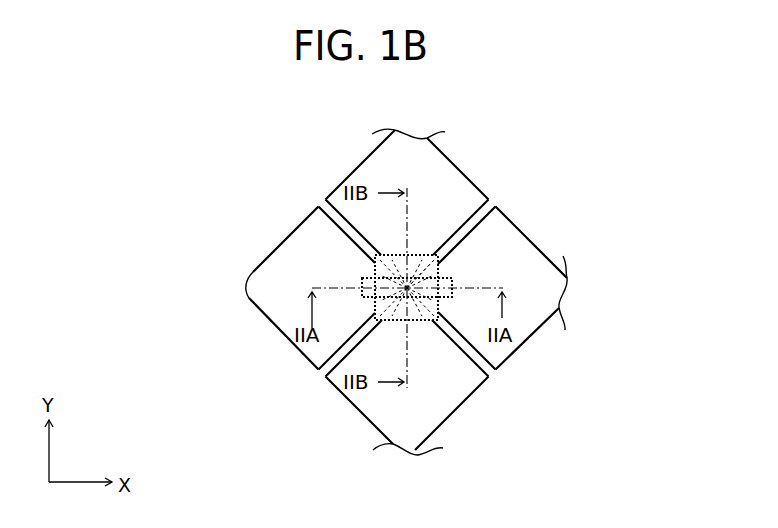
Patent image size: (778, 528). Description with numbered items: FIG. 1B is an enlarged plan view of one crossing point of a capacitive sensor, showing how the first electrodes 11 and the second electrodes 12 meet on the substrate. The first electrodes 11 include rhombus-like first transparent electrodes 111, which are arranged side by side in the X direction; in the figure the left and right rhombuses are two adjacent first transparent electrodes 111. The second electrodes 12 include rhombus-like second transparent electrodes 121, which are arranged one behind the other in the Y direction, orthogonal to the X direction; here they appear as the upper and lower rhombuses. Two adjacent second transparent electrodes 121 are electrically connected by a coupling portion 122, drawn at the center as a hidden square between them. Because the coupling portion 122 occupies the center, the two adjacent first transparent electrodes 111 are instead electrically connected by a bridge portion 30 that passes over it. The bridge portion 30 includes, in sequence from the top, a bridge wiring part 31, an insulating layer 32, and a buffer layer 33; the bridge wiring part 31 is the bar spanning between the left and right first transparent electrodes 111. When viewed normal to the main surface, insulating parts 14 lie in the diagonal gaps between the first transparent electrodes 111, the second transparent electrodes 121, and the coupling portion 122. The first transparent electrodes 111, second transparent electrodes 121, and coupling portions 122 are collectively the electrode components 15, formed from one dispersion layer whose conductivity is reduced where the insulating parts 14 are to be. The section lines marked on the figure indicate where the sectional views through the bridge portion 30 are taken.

The first electrode 11 is at (434, 283).
The first transparent electrode 111 is at (291, 249).
The second electrode 12 is at (472, 270).
The second transparent electrode 121 is at (440, 172).
The coupling portion 122 is at (412, 254).
The insulating part 14 is at (372, 305).
The electrode component 15 is at (347, 167).
The bridge portion 30 is at (516, 235).
The bridge wiring part 31 is at (453, 289).
The insulating layer 32 is at (453, 281).
The buffer layer 33 is at (440, 272).